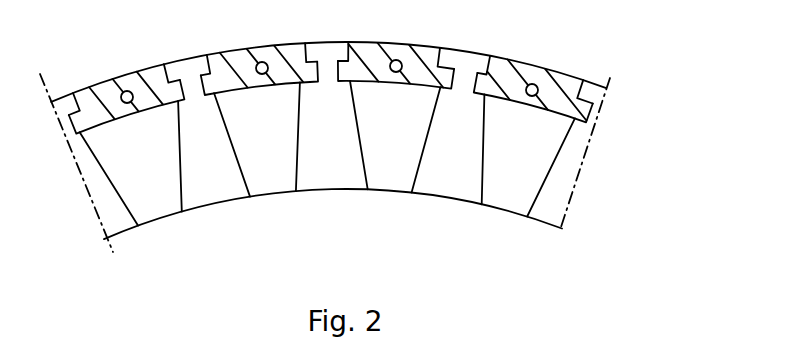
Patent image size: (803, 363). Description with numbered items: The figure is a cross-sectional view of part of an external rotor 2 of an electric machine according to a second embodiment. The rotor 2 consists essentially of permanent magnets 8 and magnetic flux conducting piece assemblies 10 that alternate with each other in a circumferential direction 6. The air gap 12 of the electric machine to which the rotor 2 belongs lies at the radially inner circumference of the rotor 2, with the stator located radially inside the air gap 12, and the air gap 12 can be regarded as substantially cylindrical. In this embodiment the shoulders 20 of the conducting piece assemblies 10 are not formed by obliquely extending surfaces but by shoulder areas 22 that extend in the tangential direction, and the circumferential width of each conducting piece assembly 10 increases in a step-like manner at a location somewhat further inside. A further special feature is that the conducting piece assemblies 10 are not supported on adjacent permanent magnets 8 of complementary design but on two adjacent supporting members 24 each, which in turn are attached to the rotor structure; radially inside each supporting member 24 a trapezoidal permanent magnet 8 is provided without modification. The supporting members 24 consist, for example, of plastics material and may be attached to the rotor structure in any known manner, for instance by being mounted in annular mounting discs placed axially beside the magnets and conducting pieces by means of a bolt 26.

The rotor 2 is at (608, 100).
The circumferential direction 6 is at (588, 145).
The permanent magnet 8 is at (113, 153).
The magnetic flux conducting piece assembly 10 is at (333, 224).
The air gap 12 is at (127, 252).
The shoulder 20 is at (175, 64).
The shoulder area 22 is at (167, 105).
The supporting member 24 is at (93, 95).
The bolt 26 is at (399, 60).